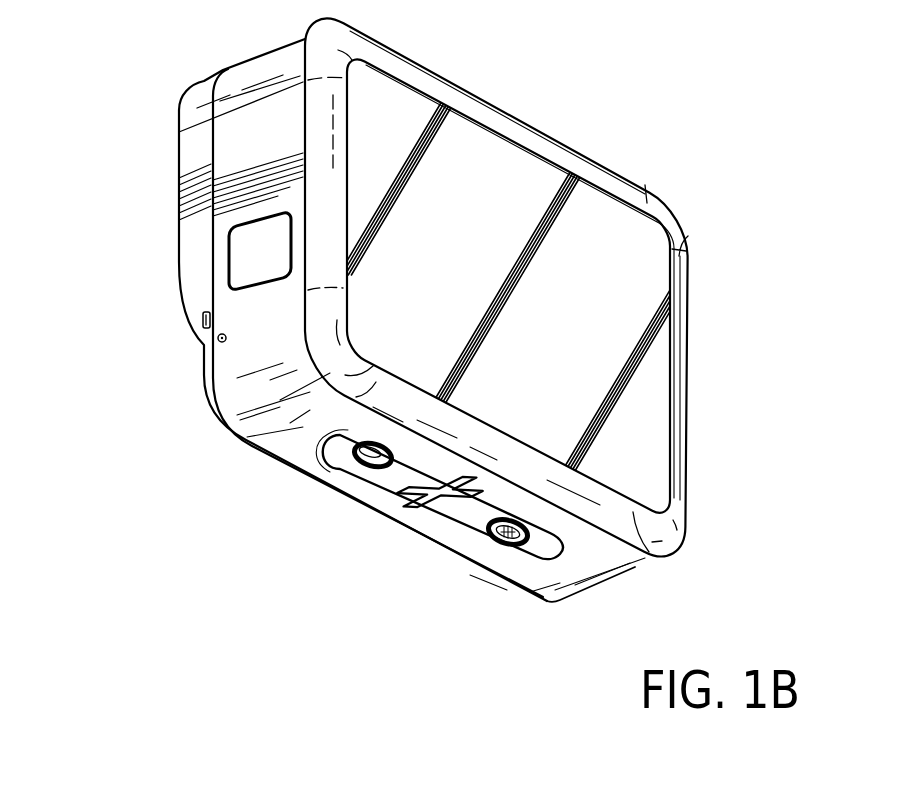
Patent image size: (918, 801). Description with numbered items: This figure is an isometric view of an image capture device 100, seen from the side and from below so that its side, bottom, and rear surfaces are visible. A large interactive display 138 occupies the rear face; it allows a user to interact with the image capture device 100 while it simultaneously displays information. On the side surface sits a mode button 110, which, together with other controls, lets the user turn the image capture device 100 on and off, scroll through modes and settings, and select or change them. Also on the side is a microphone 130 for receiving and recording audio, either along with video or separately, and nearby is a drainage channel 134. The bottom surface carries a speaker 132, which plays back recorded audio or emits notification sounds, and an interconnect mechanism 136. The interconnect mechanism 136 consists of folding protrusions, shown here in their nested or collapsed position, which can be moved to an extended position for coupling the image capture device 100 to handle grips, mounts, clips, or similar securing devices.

The image capture device 100 is at (674, 111).
The mode button 110 is at (240, 259).
The microphone 130 is at (216, 340).
The speaker 132 is at (511, 546).
The drainage channel 134 is at (197, 318).
The interconnect mechanism 136 is at (373, 479).
The interactive display 138 is at (645, 408).